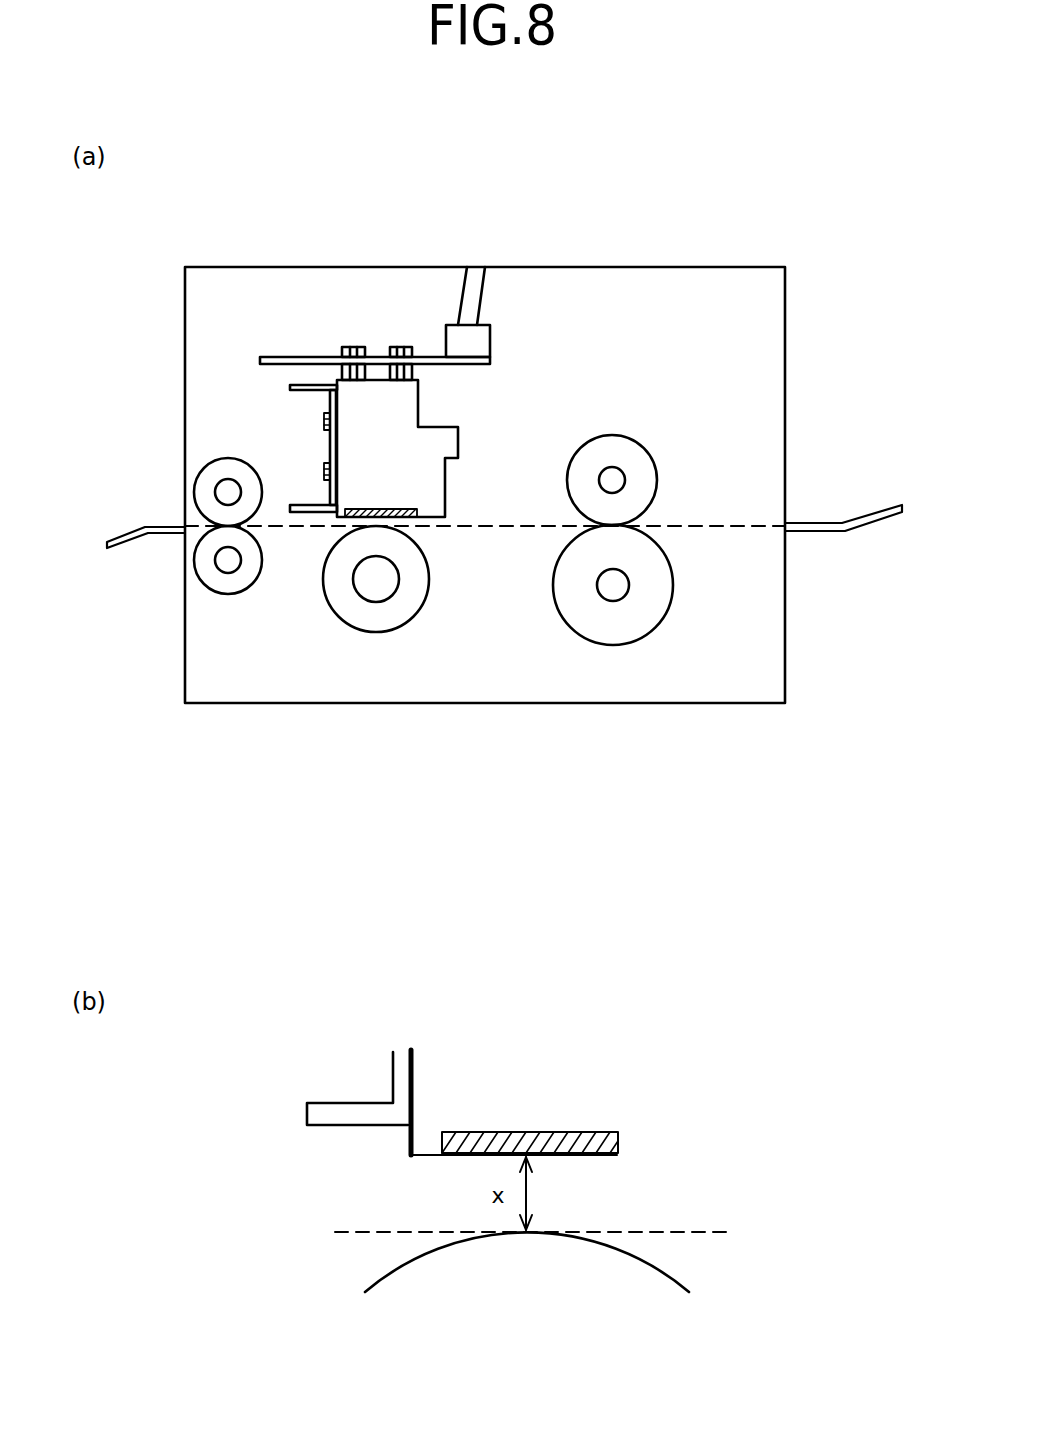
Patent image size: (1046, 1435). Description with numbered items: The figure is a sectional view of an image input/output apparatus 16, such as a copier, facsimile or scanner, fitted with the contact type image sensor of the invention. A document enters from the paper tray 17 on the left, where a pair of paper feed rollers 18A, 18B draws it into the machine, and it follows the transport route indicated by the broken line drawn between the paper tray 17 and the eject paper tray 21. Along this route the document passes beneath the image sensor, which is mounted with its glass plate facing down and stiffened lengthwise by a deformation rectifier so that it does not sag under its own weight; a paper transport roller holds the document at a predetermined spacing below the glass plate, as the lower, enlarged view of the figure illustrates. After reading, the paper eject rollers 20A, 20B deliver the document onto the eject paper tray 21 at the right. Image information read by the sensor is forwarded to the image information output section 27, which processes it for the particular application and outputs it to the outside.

The image input/output apparatus 16 is at (649, 267).
The paper tray 17 is at (128, 533).
The paper feed roller 18A is at (225, 465).
The paper feed roller 18B is at (215, 577).
The paper eject roller 20A is at (645, 448).
The paper eject roller 20B is at (602, 635).
The eject paper tray 21 is at (866, 510).
The image information output section 27 is at (450, 342).